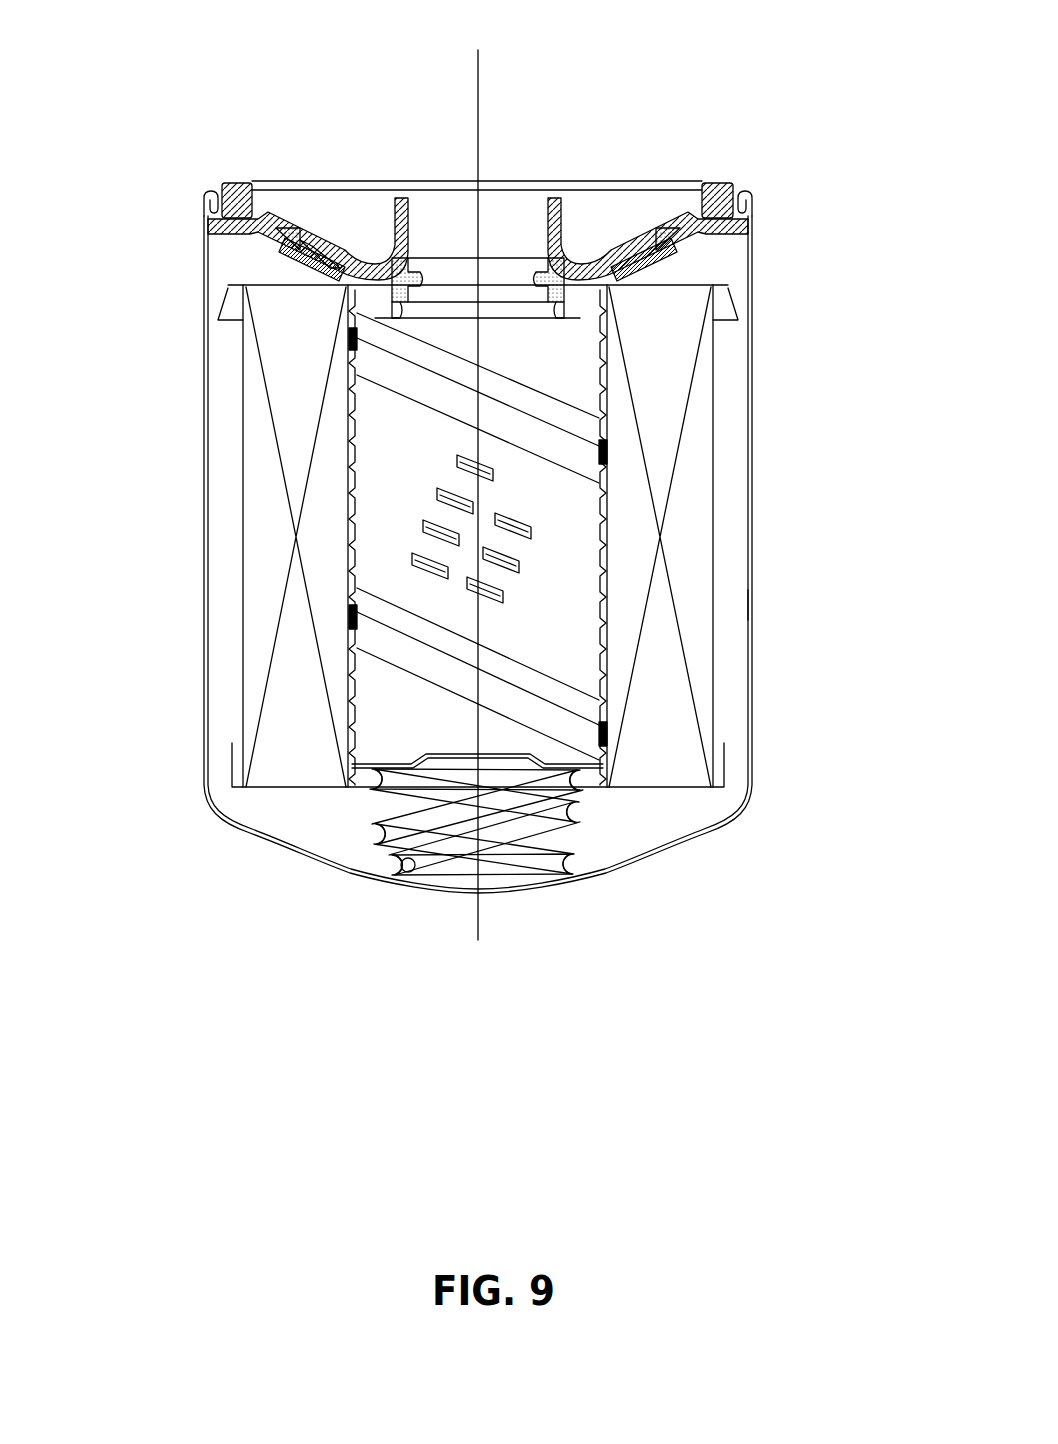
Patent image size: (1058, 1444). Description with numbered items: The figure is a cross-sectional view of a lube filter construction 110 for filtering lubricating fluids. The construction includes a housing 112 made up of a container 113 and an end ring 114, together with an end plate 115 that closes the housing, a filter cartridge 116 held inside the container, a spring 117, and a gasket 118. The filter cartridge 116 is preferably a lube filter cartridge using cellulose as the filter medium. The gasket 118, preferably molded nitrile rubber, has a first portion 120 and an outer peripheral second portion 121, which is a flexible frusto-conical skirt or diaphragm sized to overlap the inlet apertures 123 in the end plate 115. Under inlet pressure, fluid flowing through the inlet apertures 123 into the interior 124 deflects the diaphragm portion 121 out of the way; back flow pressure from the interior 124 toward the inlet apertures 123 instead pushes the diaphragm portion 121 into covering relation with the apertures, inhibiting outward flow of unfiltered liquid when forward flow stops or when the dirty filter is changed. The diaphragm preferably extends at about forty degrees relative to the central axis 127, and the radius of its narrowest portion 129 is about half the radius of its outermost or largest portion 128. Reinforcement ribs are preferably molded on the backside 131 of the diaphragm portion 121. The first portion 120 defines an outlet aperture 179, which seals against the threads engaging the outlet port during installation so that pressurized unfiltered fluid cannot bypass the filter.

The lube filter construction 110 is at (835, 247).
The housing 112 is at (753, 415).
The container 113 is at (753, 528).
The end ring 114 is at (702, 205).
The end plate 115 is at (282, 213).
The filter cartridge 116 is at (745, 605).
The spring 117 is at (583, 872).
The gasket 118 is at (655, 245).
The first portion 120 is at (394, 258).
The second portion 121 is at (290, 243).
The inlet apertures 123 is at (334, 240).
The interior 124 is at (208, 460).
The central axis 127 is at (478, 80).
The outermost or largest portion 128 is at (310, 250).
The narrowest portion 129 is at (395, 290).
The backside 131 is at (628, 258).
The outlet aperture 179 is at (530, 287).